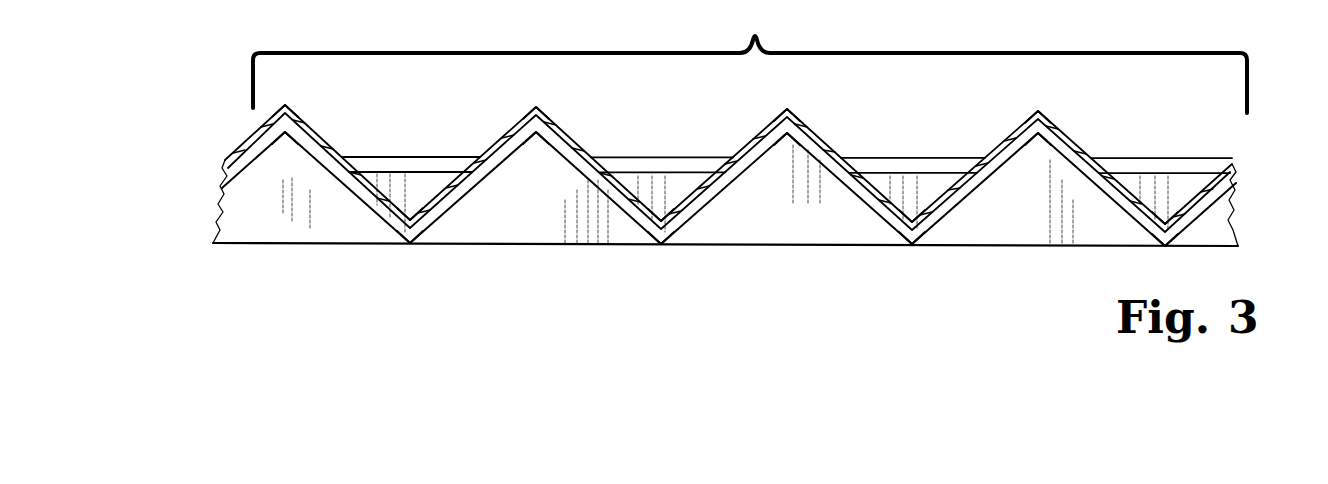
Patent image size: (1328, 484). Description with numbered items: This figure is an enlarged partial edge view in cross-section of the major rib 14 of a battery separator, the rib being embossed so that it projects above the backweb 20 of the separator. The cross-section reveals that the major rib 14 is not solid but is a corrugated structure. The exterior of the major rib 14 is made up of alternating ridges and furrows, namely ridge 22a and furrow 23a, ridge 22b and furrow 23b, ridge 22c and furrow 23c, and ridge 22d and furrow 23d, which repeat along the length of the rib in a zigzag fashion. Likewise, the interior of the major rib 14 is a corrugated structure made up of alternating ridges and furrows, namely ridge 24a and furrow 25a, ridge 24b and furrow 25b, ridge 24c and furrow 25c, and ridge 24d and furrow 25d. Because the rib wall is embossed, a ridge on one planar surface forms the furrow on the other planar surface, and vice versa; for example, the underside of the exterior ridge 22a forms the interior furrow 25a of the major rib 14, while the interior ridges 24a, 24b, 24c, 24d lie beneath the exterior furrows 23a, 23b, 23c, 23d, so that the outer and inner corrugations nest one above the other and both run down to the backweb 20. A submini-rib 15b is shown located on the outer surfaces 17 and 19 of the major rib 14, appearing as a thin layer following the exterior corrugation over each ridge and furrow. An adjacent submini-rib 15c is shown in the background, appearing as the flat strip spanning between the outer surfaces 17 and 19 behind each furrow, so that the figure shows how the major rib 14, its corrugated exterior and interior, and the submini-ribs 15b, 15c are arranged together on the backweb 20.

The major rib 14 is at (750, 56).
The submini-rib 15b is at (269, 118).
The adjacent submini-rib 15c is at (407, 162).
The outer surface 17 is at (381, 172).
The outer surface 19 is at (518, 123).
The backweb 20 is at (441, 218).
The ridge 22a is at (296, 117).
The ridge 22b is at (546, 117).
The ridge 22c is at (797, 118).
The ridge 22d is at (1048, 119).
The furrow 23a is at (414, 215).
The furrow 23b is at (664, 217).
The furrow 23c is at (917, 217).
The furrow 23d is at (1179, 213).
The ridge 24a is at (410, 245).
The ridge 24b is at (660, 246).
The ridge 24c is at (912, 246).
The ridge 24d is at (1165, 248).
The furrow 25a is at (283, 134).
The furrow 25b is at (535, 134).
The furrow 25c is at (786, 135).
The furrow 25d is at (1037, 135).